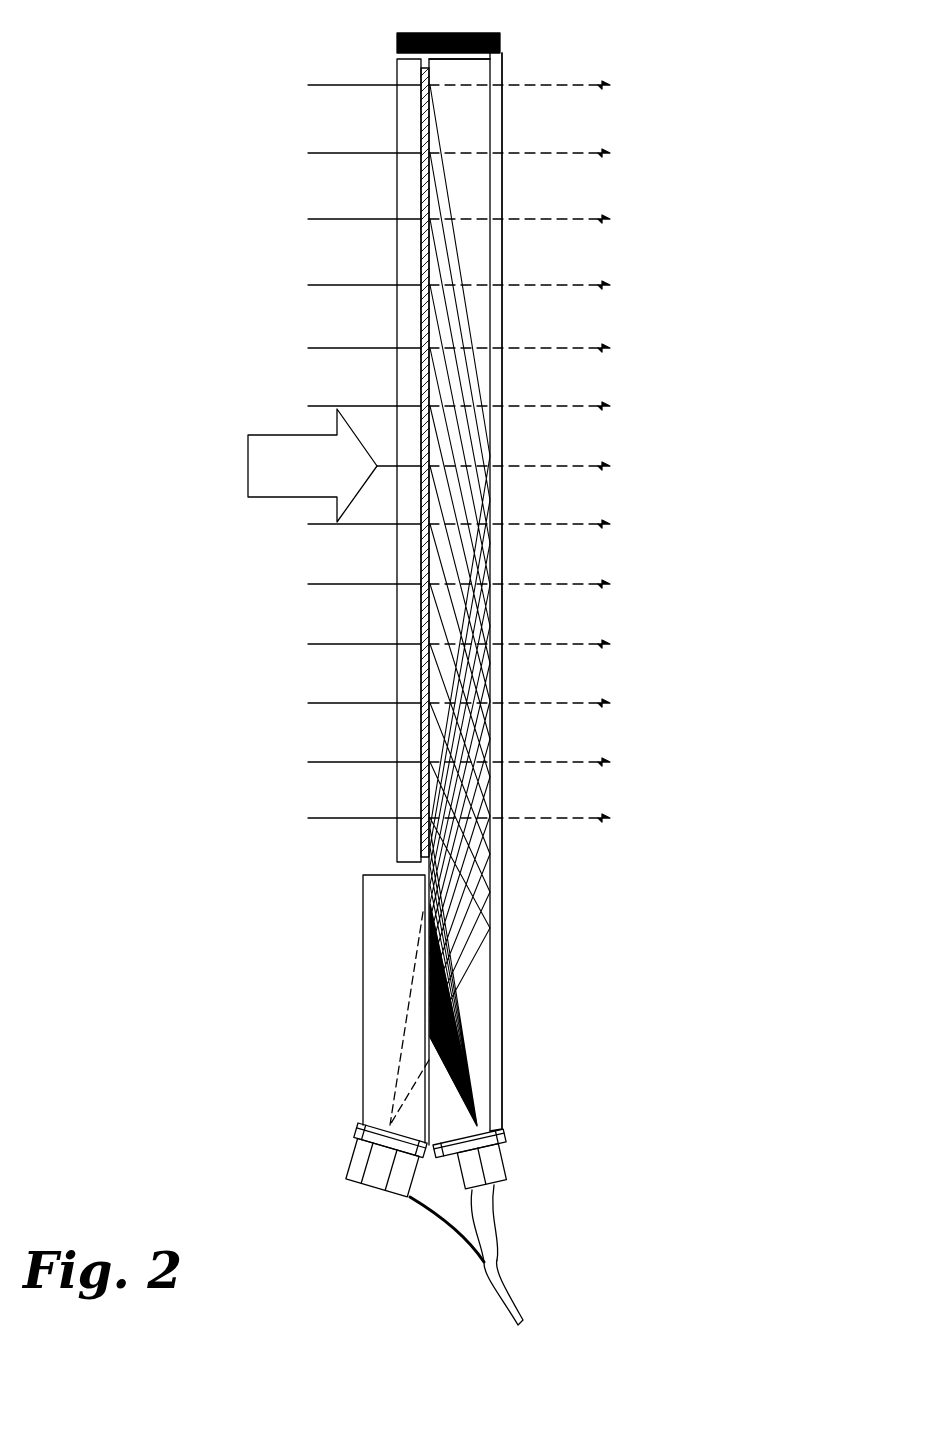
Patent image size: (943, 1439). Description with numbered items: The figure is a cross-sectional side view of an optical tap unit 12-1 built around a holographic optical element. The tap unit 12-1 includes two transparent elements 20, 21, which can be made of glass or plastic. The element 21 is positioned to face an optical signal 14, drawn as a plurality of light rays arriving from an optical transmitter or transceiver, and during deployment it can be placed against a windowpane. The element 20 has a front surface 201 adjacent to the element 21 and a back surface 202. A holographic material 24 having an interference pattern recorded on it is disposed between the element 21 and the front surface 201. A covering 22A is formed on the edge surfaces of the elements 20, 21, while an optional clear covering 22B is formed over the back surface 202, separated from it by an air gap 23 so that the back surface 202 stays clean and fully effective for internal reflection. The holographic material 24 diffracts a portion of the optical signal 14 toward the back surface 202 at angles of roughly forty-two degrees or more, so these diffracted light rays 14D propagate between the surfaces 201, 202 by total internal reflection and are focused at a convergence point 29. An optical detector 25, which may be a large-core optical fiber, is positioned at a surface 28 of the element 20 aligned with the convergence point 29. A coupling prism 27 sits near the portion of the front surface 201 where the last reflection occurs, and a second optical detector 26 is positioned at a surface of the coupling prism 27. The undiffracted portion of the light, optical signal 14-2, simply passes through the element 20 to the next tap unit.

The optical tap unit 12-1 is at (156, 118).
The covering 22A is at (500, 38).
The element 21 is at (408, 113).
The holographic material 24 is at (420, 188).
The element 20 is at (473, 108).
The front surface 201 is at (432, 66).
The back surface 202 is at (486, 127).
The air gap 23 is at (498, 248).
The covering 22B is at (502, 171).
The optical signal 14 is at (334, 451).
The undiffracted optical signal 14-2 is at (567, 838).
The diffracted light rays 14D is at (465, 1000).
The coupling prism 27 is at (385, 958).
The optical detector 26 is at (356, 1160).
The surface 28 is at (493, 1127).
The convergence point 29 is at (478, 1116).
The optical detector 25 is at (508, 1165).